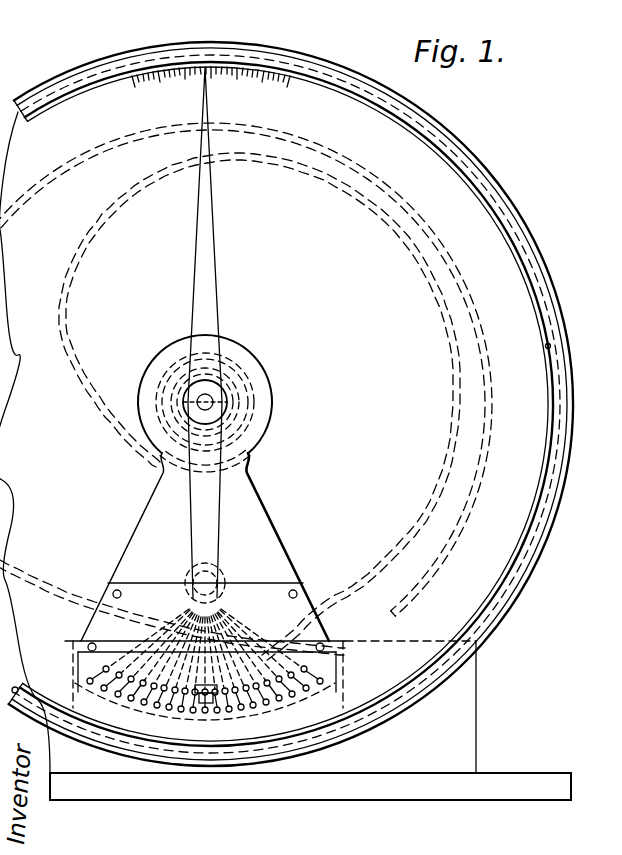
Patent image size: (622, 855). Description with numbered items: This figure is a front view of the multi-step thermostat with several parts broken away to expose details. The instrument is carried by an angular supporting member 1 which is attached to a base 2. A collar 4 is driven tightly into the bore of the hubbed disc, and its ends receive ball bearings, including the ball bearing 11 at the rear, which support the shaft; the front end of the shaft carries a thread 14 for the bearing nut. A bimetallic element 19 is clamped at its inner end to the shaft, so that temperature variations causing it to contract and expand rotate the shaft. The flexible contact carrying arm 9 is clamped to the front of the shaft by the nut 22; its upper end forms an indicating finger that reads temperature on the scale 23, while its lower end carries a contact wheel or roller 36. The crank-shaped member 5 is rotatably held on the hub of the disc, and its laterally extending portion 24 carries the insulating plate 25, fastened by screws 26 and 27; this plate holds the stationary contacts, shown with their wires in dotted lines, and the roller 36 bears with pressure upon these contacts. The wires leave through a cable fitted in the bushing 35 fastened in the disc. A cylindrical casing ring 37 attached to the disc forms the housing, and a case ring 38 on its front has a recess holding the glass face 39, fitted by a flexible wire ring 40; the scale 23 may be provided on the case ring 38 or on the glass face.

The angular supporting member 1 is at (478, 721).
The base 2 is at (548, 773).
The collar 4 is at (232, 403).
The crank-shaped member 5 is at (262, 378).
The contact carrying arm 9 is at (214, 293).
The ball bearing 11 is at (340, 667).
The thread 14 is at (208, 400).
The bimetallic element 19 is at (86, 242).
The nut 22 is at (235, 417).
The scale 23 is at (272, 61).
The laterally extending portion 24 is at (284, 538).
The insulating plate 25 is at (163, 581).
The screw 26 is at (113, 591).
The screw 27 is at (86, 645).
The bushing 35 is at (217, 576).
The contact wheel or roller 36 is at (192, 718).
The cylindrical casing ring 37 is at (513, 219).
The case ring 38 is at (572, 448).
The glass face 39 is at (415, 153).
The flexible wire ring 40 is at (550, 346).